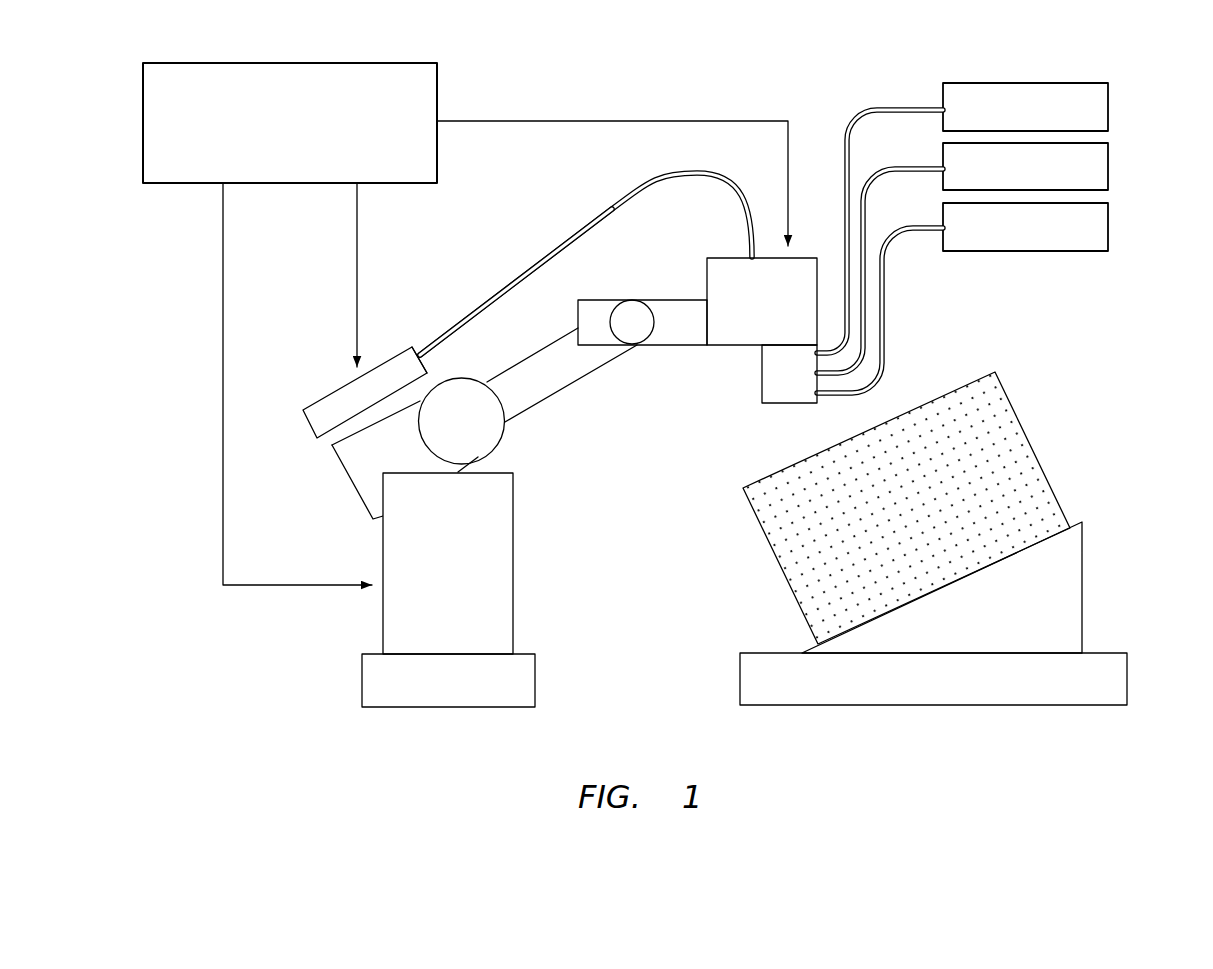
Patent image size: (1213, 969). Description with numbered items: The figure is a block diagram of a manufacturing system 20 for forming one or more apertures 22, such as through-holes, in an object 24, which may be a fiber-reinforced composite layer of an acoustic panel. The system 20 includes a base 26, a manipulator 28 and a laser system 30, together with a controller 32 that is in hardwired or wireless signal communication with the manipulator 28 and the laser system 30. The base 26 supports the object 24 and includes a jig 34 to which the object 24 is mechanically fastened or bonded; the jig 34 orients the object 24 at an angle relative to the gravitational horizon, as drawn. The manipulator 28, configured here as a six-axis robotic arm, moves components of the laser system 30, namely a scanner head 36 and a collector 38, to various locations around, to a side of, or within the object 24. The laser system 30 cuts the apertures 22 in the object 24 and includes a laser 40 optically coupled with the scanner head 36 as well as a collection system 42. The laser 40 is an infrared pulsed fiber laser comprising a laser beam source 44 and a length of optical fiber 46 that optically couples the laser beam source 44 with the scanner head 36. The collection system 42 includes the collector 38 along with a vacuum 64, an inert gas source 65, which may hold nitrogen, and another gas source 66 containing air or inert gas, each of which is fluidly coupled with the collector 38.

The manufacturing system 20 is at (808, 102).
The apertures 22 is at (1015, 455).
The object 24 is at (1050, 477).
The base 26 is at (1115, 622).
The manipulator 28 is at (549, 450).
The laser system 30 is at (648, 178).
The controller 32 is at (437, 77).
The jig 34 is at (1083, 569).
The scanner head 36 is at (733, 338).
The collector 38 is at (768, 395).
The laser 40 is at (429, 325).
The collection system 42 is at (906, 98).
The laser beam source 44 is at (326, 393).
The optical fiber 46 is at (558, 245).
The vacuum 64 is at (1109, 167).
The inert gas source 65 is at (1109, 107).
The gas source 66 is at (1109, 237).